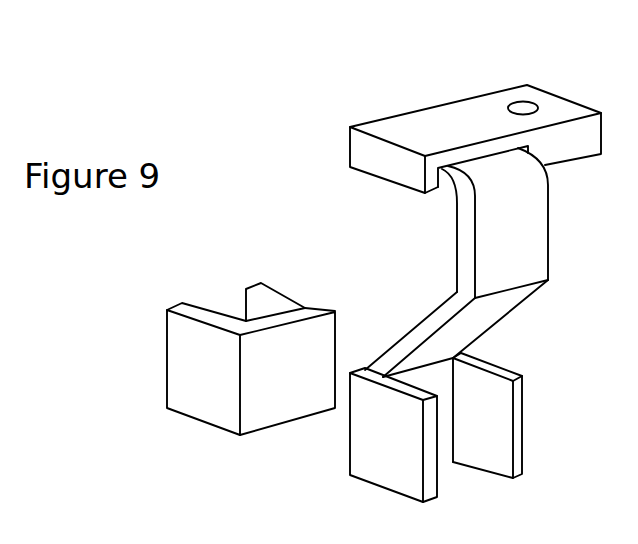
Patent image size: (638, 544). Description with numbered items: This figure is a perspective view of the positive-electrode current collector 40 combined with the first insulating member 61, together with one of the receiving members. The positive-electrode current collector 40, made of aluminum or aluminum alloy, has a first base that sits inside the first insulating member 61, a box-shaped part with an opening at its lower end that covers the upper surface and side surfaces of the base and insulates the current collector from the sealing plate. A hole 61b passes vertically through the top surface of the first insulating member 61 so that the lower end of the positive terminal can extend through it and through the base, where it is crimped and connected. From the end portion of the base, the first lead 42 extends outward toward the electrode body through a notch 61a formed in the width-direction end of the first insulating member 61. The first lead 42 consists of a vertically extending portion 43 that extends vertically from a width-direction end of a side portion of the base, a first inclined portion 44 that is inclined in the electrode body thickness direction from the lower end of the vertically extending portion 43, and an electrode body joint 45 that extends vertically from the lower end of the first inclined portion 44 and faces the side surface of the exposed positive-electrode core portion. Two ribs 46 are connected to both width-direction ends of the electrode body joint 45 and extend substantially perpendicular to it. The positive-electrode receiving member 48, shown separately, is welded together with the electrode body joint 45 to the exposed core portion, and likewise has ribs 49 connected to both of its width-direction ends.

The positive-electrode current collector 40 is at (490, 340).
The first lead 42 is at (518, 263).
The vertically extending portion 43 is at (518, 215).
The first inclined portion 44 is at (482, 320).
The electrode body joint 45 is at (440, 450).
The ribs 46 is at (490, 417).
The positive-electrode receiving member 48 is at (282, 408).
The ribs 49 is at (202, 400).
The first insulating member 61 is at (487, 100).
The notch 61a is at (478, 155).
The hole 61b is at (523, 110).